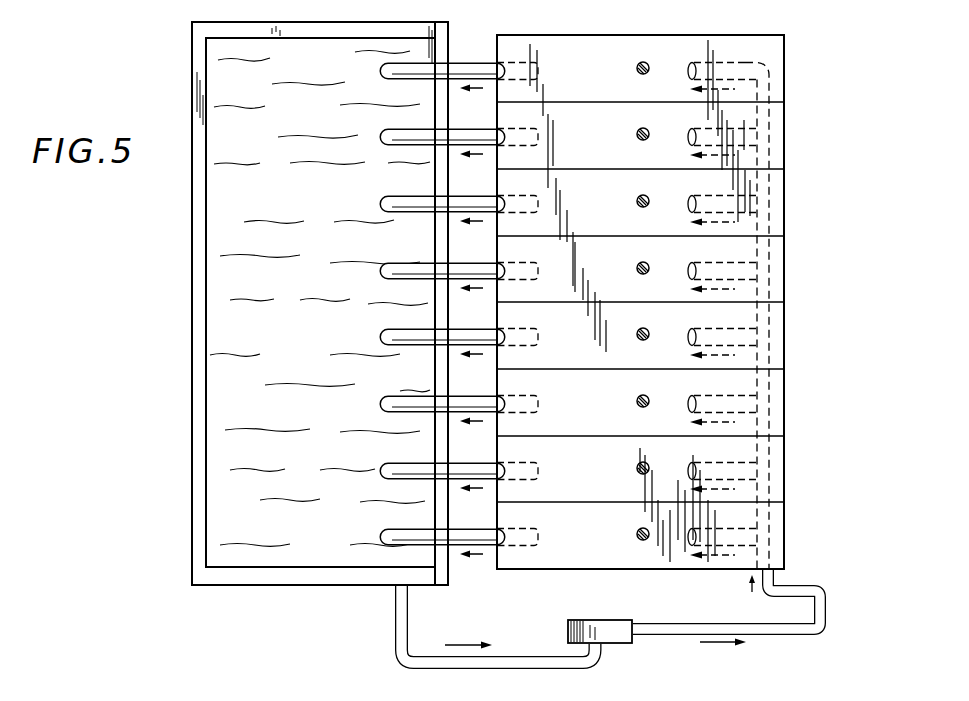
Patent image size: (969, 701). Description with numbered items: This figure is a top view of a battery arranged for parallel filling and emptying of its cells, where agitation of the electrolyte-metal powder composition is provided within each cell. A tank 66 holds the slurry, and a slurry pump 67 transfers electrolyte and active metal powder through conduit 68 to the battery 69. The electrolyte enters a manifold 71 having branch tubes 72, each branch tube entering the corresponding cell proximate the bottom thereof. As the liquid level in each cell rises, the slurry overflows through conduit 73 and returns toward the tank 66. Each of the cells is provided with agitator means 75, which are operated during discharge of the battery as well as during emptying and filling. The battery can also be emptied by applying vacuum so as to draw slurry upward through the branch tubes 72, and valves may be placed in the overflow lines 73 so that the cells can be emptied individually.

The tank 66 is at (195, 445).
The slurry pump 67 is at (623, 608).
The conduit 68 is at (709, 626).
The battery 69 is at (552, 22).
The manifold 71 is at (758, 117).
The branch tube 72 is at (752, 381).
The conduit 73 is at (465, 64).
The agitator means 75 is at (642, 61).